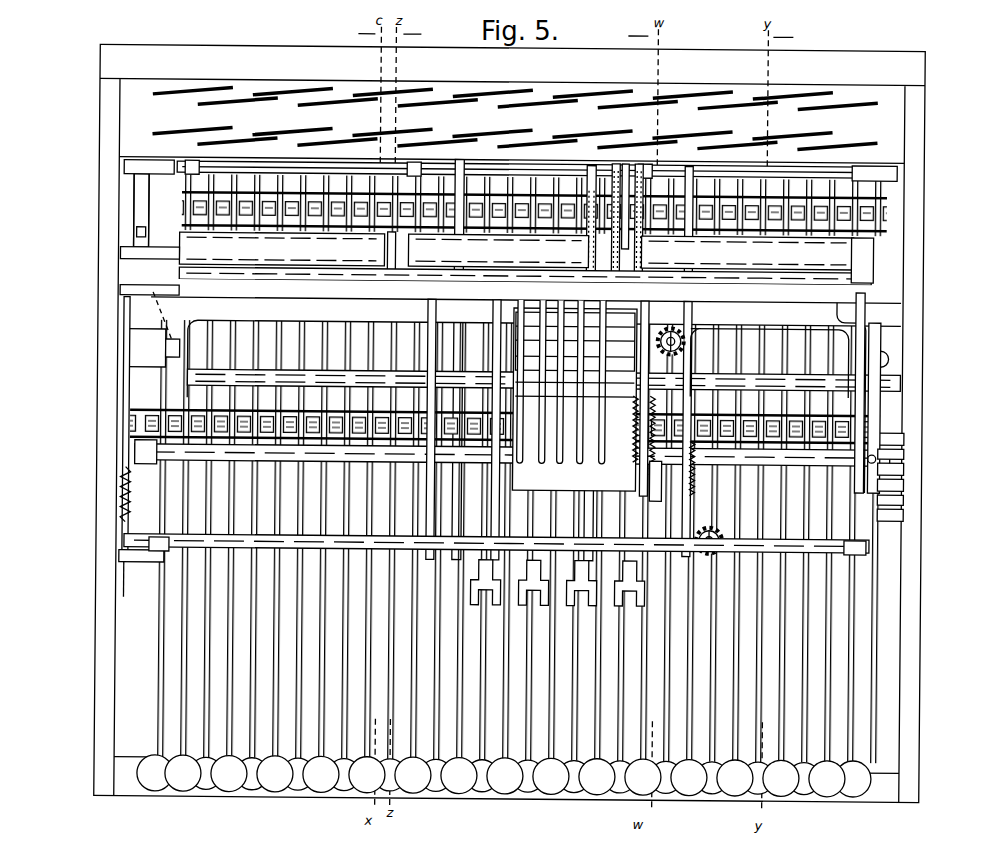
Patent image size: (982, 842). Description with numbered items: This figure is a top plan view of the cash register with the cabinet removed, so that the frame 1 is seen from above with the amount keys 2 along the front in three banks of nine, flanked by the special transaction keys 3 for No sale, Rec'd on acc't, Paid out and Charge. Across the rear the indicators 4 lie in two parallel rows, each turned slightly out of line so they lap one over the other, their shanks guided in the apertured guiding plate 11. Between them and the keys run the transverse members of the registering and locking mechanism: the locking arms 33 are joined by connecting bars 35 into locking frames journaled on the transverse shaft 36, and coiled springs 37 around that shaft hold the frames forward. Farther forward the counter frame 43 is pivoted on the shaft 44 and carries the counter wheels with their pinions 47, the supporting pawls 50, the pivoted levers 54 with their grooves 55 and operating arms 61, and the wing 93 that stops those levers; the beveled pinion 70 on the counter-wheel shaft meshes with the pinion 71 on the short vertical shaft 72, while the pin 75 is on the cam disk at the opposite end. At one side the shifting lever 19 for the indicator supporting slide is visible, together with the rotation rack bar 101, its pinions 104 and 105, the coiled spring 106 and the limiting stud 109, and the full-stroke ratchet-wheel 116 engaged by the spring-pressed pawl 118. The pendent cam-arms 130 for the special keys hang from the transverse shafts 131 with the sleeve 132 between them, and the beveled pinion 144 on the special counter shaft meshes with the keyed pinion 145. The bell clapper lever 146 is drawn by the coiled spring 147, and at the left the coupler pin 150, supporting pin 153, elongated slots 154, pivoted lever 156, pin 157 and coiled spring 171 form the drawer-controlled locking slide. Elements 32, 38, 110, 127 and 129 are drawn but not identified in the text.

The frame 1 is at (97, 131).
The amount keys 2 is at (556, 795).
The special transaction keys 3 is at (160, 795).
The indicators 4 is at (290, 92).
The guiding plate 11 is at (190, 128).
The shifting lever 19 is at (855, 316).
The bar 32 is at (557, 251).
The locking arm 33 is at (182, 255).
The connecting bar 35 is at (250, 168).
The transverse shaft 36 is at (532, 156).
The coiled spring 37 is at (195, 168).
The post 38 is at (396, 255).
The counter frame 43 is at (465, 262).
The shaft 44 is at (644, 252).
The pinion 47 is at (660, 322).
The supporting pawl 50 is at (518, 345).
The pivoted lever 54 is at (608, 436).
The groove 55 is at (562, 320).
The operating arm 61 is at (120, 462).
The beveled pinion 70 is at (690, 318).
The beveled pinion 71 is at (686, 335).
The vertical shaft 72 is at (690, 345).
The pin 75 is at (520, 318).
The wing 93 is at (660, 420).
The rotation rack bar 101 is at (905, 508).
The pinion 104 is at (905, 458).
The pinion 105 is at (905, 522).
The coiled spring 106 is at (905, 477).
The stud 109 is at (905, 493).
The post 110 is at (868, 362).
The ratchet-wheel 116 is at (540, 322).
The spring-pressed pawl 118 is at (730, 380).
The rail 127 is at (400, 323).
The bar 129 is at (315, 238).
The pendent cam-arm 130 is at (165, 550).
The transverse shaft 131 is at (190, 560).
The sleeve 132 is at (561, 393).
The beveled pinion 144 is at (725, 549).
The beveled pinion 145 is at (496, 547).
The bell clapper lever 146 is at (120, 493).
The coiled spring 147 is at (120, 530).
The pin 150 is at (160, 300).
The pin 153 is at (120, 237).
The elongated slot 154 is at (120, 292).
The pivoted lever 156 is at (125, 345).
The pin 157 is at (120, 308).
The coiled spring 171 is at (132, 255).